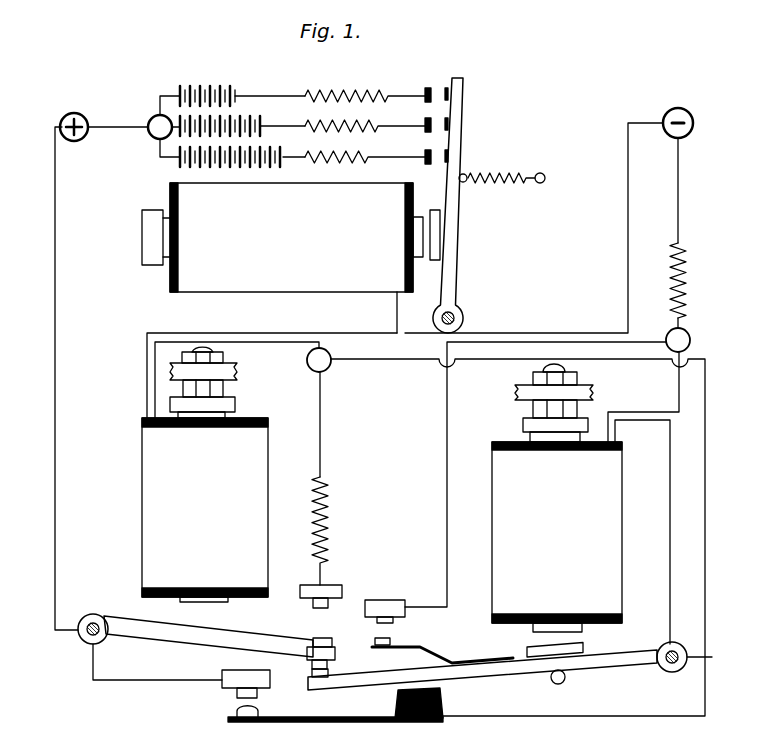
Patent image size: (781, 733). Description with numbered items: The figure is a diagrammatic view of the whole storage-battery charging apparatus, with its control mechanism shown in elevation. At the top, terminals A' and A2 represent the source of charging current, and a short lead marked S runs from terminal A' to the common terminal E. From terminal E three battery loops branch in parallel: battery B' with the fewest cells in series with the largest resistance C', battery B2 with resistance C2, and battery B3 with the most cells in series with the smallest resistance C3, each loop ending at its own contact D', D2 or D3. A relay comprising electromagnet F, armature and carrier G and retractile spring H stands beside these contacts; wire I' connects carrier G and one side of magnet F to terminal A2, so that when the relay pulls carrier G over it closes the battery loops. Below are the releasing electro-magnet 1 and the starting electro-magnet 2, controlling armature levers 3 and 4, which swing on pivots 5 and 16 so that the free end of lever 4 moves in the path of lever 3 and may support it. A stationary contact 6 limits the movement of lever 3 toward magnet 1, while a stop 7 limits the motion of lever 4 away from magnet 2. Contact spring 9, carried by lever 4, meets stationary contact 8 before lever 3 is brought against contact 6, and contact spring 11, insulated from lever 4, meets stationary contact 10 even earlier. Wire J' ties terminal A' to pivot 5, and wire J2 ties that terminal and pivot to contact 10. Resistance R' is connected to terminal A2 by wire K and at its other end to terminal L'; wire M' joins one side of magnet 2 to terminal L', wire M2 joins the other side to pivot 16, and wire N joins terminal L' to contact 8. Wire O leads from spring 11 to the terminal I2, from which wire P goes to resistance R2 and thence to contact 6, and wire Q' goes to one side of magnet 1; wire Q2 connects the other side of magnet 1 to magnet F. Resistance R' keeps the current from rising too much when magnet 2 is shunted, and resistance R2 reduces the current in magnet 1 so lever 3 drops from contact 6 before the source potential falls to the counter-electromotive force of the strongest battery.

The charging-current terminal A' is at (54, 117).
The charging-current terminal A2 is at (694, 105).
The supply wire S is at (120, 136).
The terminal E is at (147, 105).
The battery B' is at (242, 83).
The battery B2 is at (250, 115).
The battery B3 is at (256, 142).
The resistance C' is at (365, 80).
The resistance C2 is at (365, 113).
The resistance C3 is at (365, 146).
The contact D' is at (414, 83).
The contact D2 is at (425, 120).
The contact D3 is at (425, 152).
The armature and carrier G is at (448, 256).
The retractile spring H is at (497, 173).
The electromagnet F is at (282, 258).
The wire I' is at (530, 228).
The junction / binding post I2 is at (331, 364).
The wire K is at (678, 203).
The resistance R' is at (691, 280).
The terminal L' is at (689, 335).
The wire Q2 is at (296, 326).
The wire Q' is at (237, 380).
The wire O is at (620, 714).
The wire N is at (447, 462).
The wire M' is at (643, 397).
The wire M2 is at (690, 476).
The wire P is at (320, 436).
The resistance R2 is at (335, 520).
The wire J' is at (66, 378).
The wire J2 is at (140, 680).
The releasing electro-magnet 1 is at (205, 474).
The starting electro-magnet 2 is at (557, 498).
The armature lever 3 is at (227, 636).
The armature lever 4 is at (352, 681).
The pivot 5 is at (97, 615).
The stationary contact 6 is at (310, 598).
The stop 7 is at (565, 680).
The stationary contact 8 is at (405, 614).
The contact spring 9 is at (418, 646).
The stationary contact 10 is at (237, 681).
The contact spring 11 is at (235, 724).
The pivot 16 is at (697, 657).